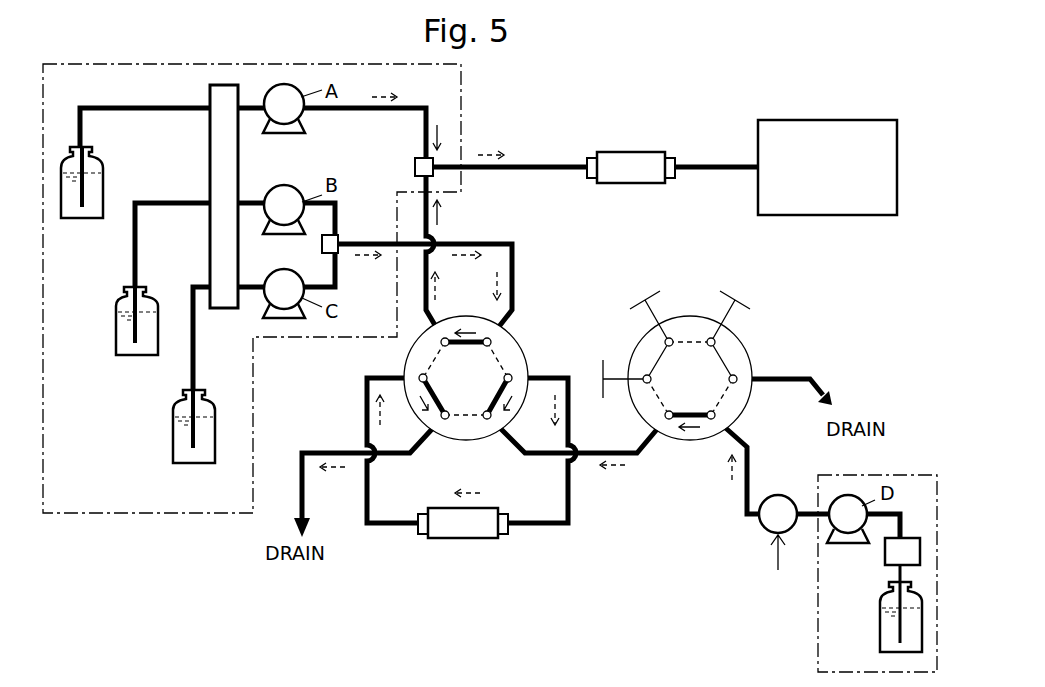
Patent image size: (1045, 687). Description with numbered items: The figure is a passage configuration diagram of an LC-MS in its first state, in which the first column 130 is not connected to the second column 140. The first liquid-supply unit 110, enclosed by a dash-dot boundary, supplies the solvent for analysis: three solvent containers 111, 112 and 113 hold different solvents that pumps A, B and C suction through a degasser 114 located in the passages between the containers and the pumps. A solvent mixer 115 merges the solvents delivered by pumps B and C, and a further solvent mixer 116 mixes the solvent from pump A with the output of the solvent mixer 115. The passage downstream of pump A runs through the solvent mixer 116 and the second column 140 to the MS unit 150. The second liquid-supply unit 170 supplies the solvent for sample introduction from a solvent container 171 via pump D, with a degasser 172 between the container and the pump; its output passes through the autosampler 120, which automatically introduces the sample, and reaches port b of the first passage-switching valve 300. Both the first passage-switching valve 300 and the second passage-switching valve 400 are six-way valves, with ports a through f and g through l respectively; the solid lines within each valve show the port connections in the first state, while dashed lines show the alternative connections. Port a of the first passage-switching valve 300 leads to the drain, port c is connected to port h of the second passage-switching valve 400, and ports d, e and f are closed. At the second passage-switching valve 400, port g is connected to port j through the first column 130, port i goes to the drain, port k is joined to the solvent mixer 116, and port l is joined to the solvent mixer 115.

The first liquid-supply unit 110 is at (115, 514).
The solvent container 111 is at (90, 220).
The solvent container 112 is at (147, 357).
The solvent container 113 is at (203, 465).
The degasser 114 is at (210, 163).
The solvent mixer 115 is at (340, 238).
The solvent mixer 116 is at (415, 166).
The autosampler 120 is at (778, 497).
The first column 130 is at (462, 540).
The second column 140 is at (630, 152).
The MS unit 150 is at (838, 120).
The second liquid-supply unit 170 is at (818, 638).
The solvent container 171 is at (880, 627).
The degasser 172 is at (885, 560).
The first passage-switching valve 300 is at (748, 350).
The second passage-switching valve 400 is at (522, 350).